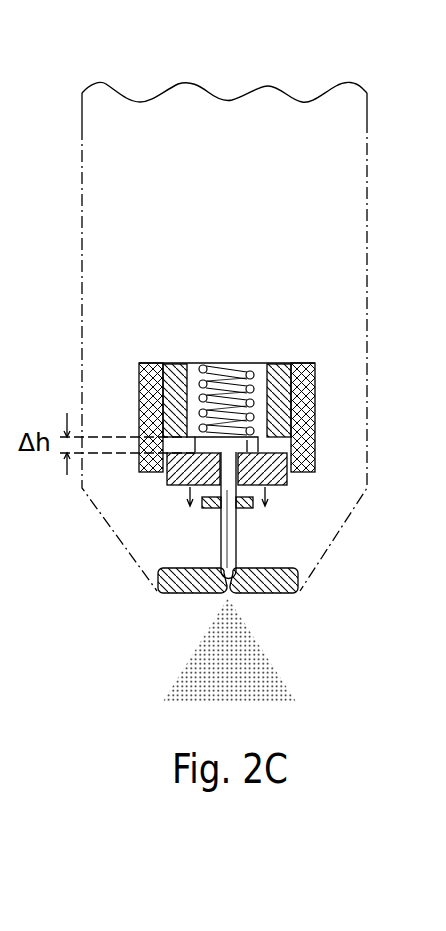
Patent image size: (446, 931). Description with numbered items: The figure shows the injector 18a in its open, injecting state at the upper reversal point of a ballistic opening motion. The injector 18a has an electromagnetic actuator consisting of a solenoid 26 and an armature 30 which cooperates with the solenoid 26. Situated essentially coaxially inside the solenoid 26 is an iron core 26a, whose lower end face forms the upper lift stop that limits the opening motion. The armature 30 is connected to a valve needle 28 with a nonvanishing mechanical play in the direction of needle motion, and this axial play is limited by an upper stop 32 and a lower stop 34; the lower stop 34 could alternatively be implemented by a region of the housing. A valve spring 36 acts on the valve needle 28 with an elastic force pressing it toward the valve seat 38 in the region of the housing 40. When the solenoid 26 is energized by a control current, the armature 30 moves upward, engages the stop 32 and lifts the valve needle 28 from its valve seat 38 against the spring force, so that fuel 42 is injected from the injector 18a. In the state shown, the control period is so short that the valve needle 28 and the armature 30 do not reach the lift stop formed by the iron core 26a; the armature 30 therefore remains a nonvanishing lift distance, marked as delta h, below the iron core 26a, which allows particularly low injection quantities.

The injector 18a is at (222, 116).
The solenoid 26 is at (152, 363).
The iron core 26a is at (275, 363).
The valve needle 28 is at (221, 521).
The armature 30 is at (170, 481).
The stop 32 is at (257, 445).
The stop 34 is at (252, 507).
The valve spring 36 is at (201, 363).
The valve seat 38 is at (220, 567).
The housing 40 is at (287, 591).
The fuel 42 is at (280, 690).